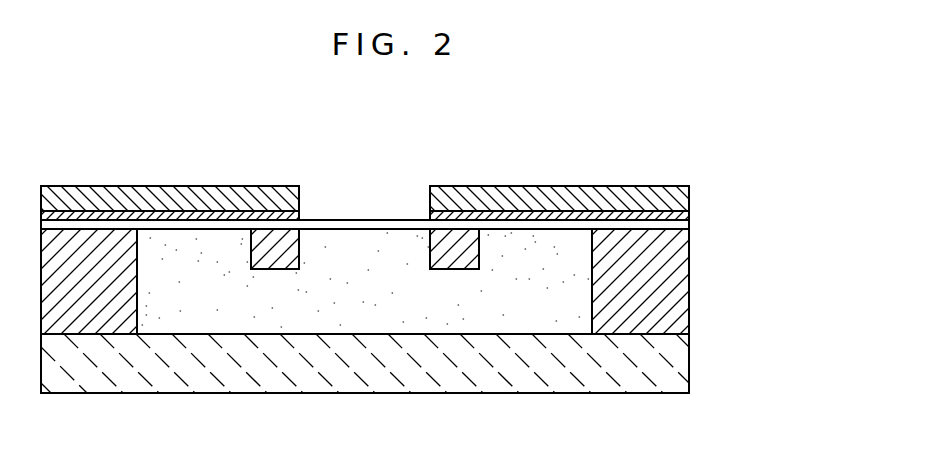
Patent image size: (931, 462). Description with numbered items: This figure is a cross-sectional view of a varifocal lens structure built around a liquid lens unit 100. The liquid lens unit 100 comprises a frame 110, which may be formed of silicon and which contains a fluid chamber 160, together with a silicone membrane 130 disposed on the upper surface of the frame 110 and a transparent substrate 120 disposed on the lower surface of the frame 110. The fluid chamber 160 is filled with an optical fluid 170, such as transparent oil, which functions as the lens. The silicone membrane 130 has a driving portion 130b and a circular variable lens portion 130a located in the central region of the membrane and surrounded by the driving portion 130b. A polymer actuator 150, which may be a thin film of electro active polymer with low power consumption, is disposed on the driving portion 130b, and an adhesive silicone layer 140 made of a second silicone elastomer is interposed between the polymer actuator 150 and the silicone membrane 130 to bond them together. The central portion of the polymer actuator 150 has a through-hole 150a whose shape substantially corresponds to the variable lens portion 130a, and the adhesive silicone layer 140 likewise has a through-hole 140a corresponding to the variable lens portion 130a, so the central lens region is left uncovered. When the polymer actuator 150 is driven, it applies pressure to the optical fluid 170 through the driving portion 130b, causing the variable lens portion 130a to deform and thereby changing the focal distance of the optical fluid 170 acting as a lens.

The liquid lens unit 100 is at (790, 225).
The frame 110 is at (689, 285).
The transparent substrate 120 is at (689, 366).
The silicone membrane 130 is at (689, 229).
The variable lens portion 130a is at (360, 226).
The driving portion 130b is at (545, 226).
The adhesive silicone layer 140 is at (689, 217).
The through-hole 140a is at (430, 216).
The polymer actuator 150 is at (689, 197).
The through-hole 150a is at (430, 189).
The fluid chamber 160 is at (345, 308).
The optical fluid 170 is at (530, 310).